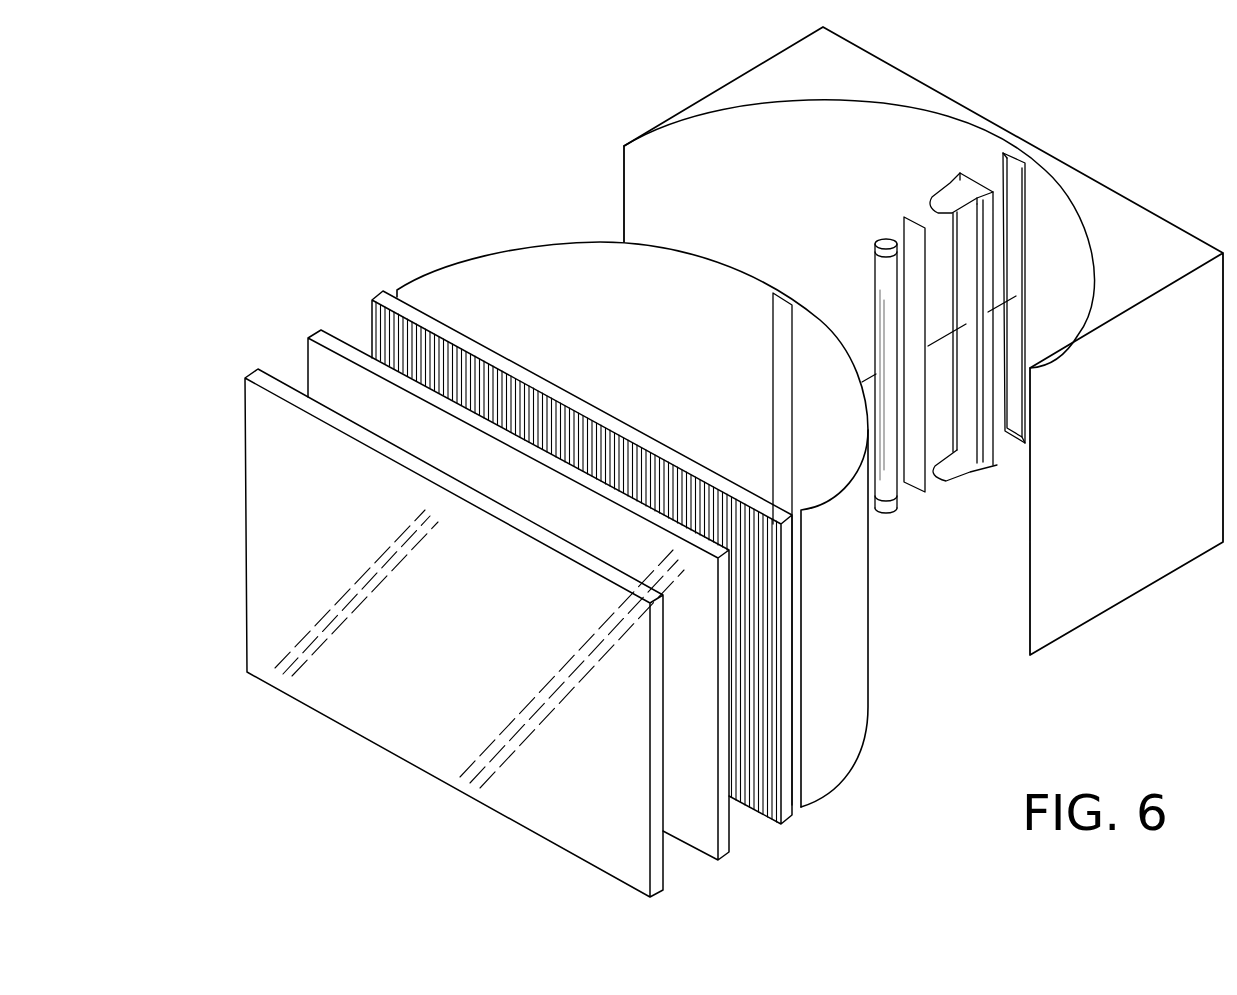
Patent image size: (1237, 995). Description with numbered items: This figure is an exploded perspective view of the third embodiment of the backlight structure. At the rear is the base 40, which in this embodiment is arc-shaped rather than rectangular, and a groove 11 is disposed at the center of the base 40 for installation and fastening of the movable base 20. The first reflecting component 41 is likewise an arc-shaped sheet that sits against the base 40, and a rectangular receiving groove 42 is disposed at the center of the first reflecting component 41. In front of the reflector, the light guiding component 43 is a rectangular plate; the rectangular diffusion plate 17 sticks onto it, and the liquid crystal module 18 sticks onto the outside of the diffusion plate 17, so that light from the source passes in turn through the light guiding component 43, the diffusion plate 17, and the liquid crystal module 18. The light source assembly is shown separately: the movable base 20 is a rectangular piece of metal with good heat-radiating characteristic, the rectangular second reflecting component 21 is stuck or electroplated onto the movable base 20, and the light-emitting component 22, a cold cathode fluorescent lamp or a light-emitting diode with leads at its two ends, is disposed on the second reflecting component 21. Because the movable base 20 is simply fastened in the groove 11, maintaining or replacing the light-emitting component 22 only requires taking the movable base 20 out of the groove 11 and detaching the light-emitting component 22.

The groove 11 is at (1012, 177).
The diffusion plate 17 is at (325, 368).
The liquid crystal module 18 is at (263, 407).
The movable base 20 is at (947, 197).
The second reflecting component 21 is at (913, 257).
The light-emitting component 22 is at (880, 278).
The base 40 is at (1150, 230).
The first reflecting component 41 is at (850, 723).
The receiving groove 42 is at (773, 293).
The light guiding component 43 is at (390, 320).